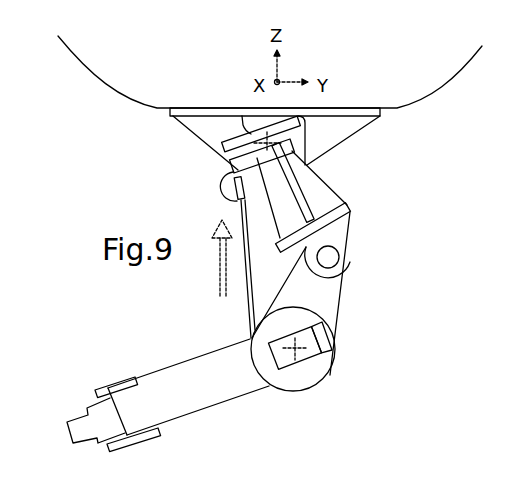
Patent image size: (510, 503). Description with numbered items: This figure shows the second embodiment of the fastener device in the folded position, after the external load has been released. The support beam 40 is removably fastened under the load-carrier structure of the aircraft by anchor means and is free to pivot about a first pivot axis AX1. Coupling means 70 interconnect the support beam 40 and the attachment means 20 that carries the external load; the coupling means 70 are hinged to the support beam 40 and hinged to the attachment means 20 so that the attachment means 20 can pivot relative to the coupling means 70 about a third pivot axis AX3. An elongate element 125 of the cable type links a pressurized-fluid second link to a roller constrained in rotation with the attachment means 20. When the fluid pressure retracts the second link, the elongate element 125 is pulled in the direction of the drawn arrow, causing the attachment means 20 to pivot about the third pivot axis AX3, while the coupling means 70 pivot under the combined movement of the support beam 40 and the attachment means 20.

The first pivot axis AX1 is at (265, 142).
The support beam 40 is at (327, 196).
The coupling means 70 is at (343, 293).
The elongate element 125 is at (248, 312).
The third pivot axis AX3 is at (339, 337).
The attachment means 20 is at (218, 397).